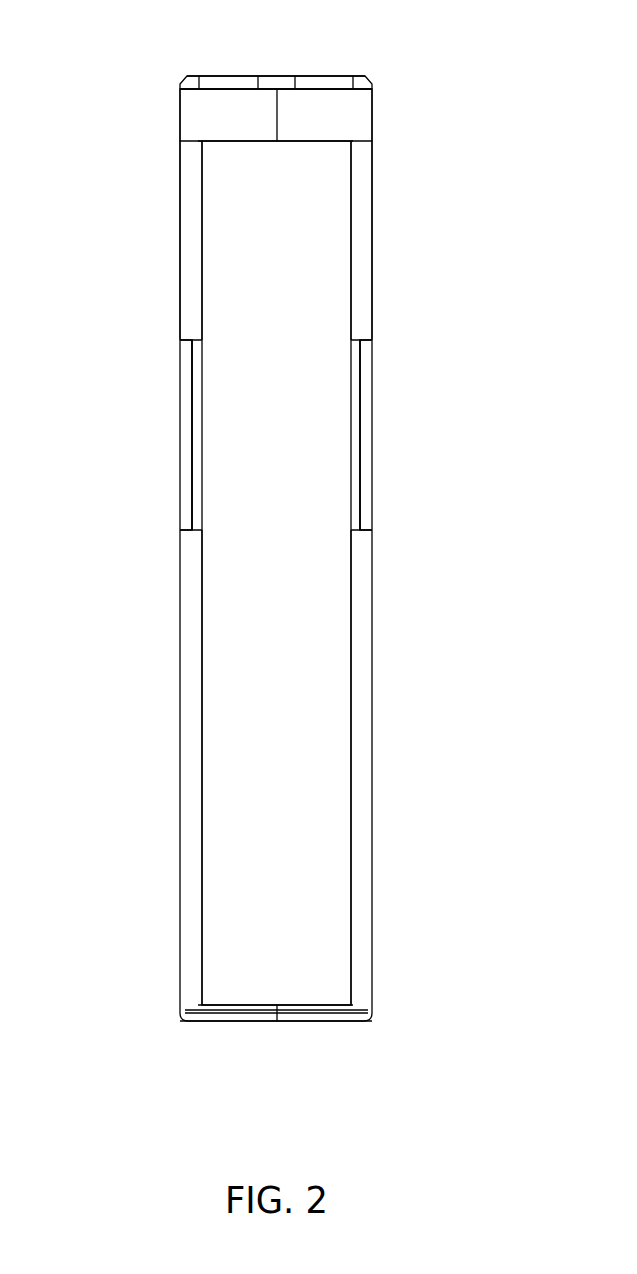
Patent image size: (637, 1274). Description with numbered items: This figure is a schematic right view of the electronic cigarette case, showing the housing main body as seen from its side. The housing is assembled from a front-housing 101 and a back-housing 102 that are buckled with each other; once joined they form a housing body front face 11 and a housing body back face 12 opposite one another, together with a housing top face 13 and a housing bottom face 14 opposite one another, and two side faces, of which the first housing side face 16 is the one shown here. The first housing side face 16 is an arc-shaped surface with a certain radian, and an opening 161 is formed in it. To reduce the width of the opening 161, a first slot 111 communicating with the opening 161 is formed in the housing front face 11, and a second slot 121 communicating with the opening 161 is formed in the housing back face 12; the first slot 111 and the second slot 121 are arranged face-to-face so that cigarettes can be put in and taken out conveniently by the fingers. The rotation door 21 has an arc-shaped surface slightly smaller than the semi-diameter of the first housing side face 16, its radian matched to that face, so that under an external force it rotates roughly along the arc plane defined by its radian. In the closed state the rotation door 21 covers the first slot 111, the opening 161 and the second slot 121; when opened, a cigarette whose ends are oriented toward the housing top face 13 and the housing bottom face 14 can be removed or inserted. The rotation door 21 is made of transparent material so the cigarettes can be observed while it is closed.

The housing body front face 11 is at (180, 677).
The housing body back face 12 is at (373, 688).
The housing top face 13 is at (242, 73).
The housing bottom face 14 is at (318, 1021).
The first housing side face 16 is at (345, 120).
The rotation door 21 is at (290, 865).
The front-housing 101 is at (190, 182).
The back-housing 102 is at (357, 245).
The first slot 111 is at (185, 403).
The second slot 121 is at (362, 448).
The opening 161 is at (293, 345).